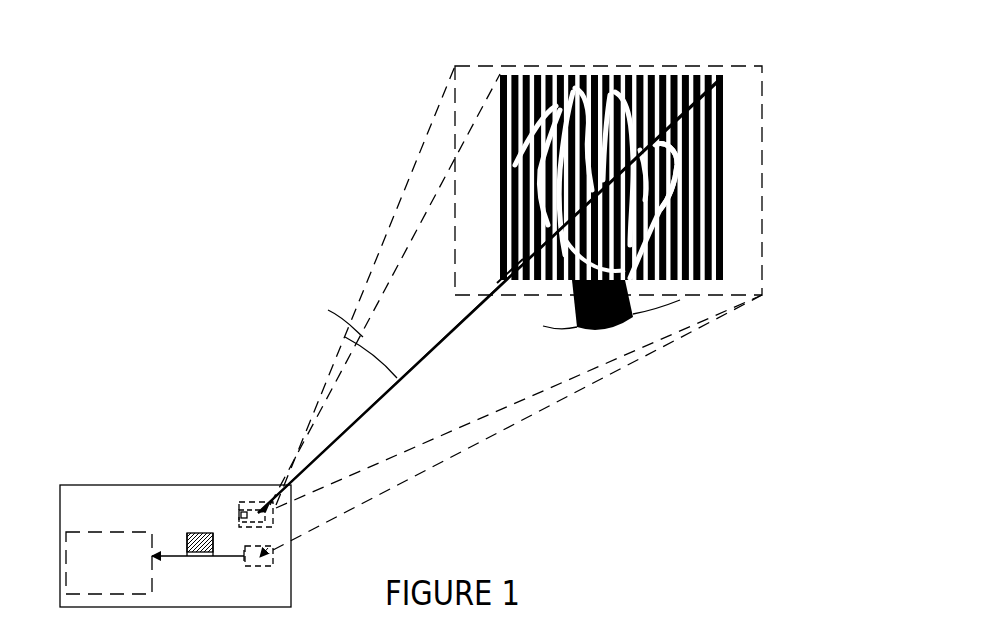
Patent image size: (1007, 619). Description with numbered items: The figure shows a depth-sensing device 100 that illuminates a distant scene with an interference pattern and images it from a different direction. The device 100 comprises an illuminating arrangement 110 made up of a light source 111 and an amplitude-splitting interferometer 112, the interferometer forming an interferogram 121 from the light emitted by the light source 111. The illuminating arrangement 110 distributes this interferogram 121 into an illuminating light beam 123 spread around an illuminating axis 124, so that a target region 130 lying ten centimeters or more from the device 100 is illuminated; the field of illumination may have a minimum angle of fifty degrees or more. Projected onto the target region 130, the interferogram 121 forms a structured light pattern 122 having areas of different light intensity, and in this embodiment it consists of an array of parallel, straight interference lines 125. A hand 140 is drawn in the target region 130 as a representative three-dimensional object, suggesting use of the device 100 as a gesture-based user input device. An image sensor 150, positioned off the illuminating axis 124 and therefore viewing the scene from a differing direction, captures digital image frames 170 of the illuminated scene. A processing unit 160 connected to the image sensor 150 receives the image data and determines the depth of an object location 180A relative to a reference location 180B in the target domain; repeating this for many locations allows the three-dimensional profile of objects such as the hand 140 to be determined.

The device 100 is at (122, 462).
The illuminating arrangement 110 is at (258, 502).
The light source 111 is at (242, 516).
The interferometer 112 is at (247, 517).
The interferogram 121 is at (565, 75).
The structured light pattern 122 is at (705, 80).
The illuminating light beam 123 is at (400, 247).
The illuminating axis 124 is at (520, 262).
The interference lines 125 is at (640, 90).
The target region 130 is at (483, 66).
The hand 140 is at (657, 203).
The image sensor 150 is at (262, 567).
The processing unit 160 is at (146, 594).
The digital image frames 170 is at (197, 532).
The object location 180A is at (577, 296).
The reference location 180B is at (593, 226).